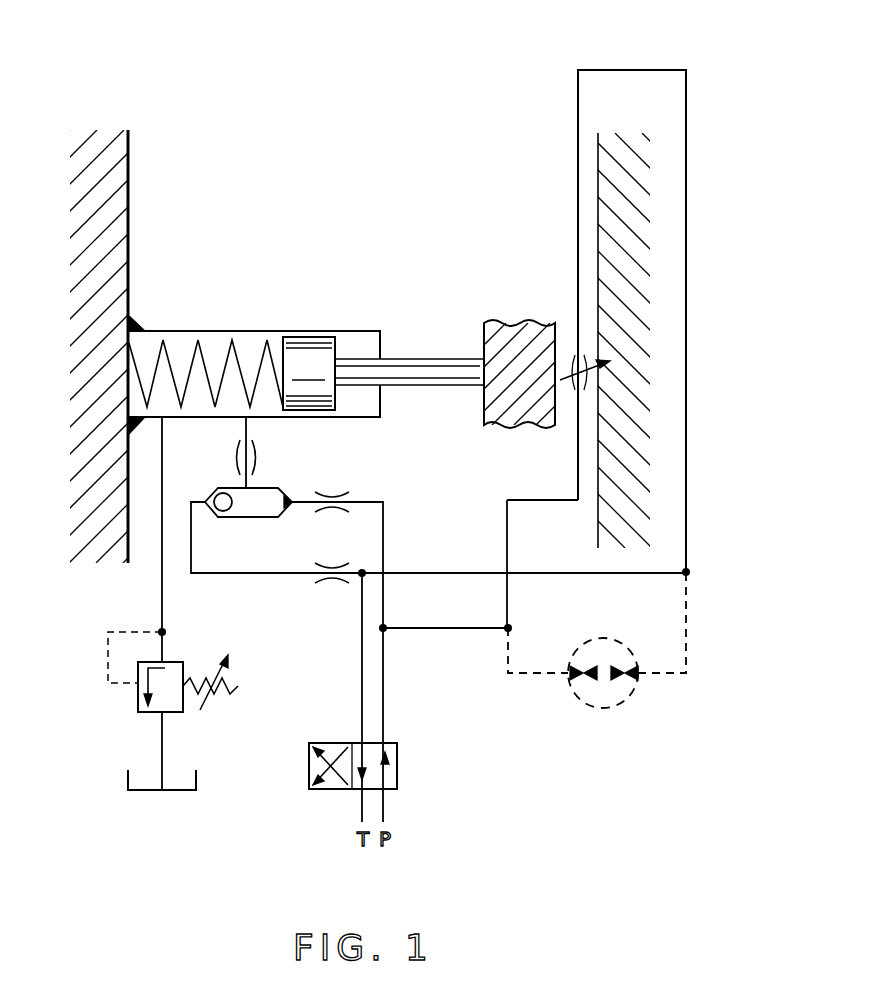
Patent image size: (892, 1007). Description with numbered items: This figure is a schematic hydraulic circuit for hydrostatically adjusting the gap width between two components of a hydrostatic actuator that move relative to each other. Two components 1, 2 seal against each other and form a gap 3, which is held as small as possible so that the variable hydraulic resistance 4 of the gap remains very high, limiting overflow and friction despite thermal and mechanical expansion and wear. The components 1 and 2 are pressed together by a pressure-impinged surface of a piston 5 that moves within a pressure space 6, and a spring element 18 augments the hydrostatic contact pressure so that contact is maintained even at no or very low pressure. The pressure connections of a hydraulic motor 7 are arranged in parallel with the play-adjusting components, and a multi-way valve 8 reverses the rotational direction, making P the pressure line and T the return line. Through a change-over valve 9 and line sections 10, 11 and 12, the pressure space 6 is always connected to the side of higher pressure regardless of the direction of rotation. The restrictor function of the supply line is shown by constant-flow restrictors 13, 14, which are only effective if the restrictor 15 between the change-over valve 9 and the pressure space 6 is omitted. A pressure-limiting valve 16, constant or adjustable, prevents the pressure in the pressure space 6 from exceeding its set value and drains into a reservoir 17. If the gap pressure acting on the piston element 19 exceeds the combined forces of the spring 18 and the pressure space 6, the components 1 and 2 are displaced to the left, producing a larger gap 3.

The component 1 is at (515, 332).
The component 2 is at (598, 132).
The gap 3 is at (590, 343).
The variable hydraulic resistance 4 is at (585, 390).
The piston 5 is at (282, 345).
The pressure space 6 is at (216, 342).
The hydraulic motor 7 is at (600, 710).
The multi-way valve 8 is at (398, 782).
The change-over valve 9 is at (278, 490).
The line section 10 is at (688, 420).
The line section 11 is at (594, 574).
The line section 12 is at (455, 630).
The restrictor 13 is at (332, 490).
The restrictor 14 is at (332, 583).
The restrictor 15 is at (240, 458).
The pressure-limiting valve 16 is at (137, 698).
The reservoir 17 is at (128, 790).
The spring element 18 is at (165, 345).
The piston element 19 is at (368, 345).